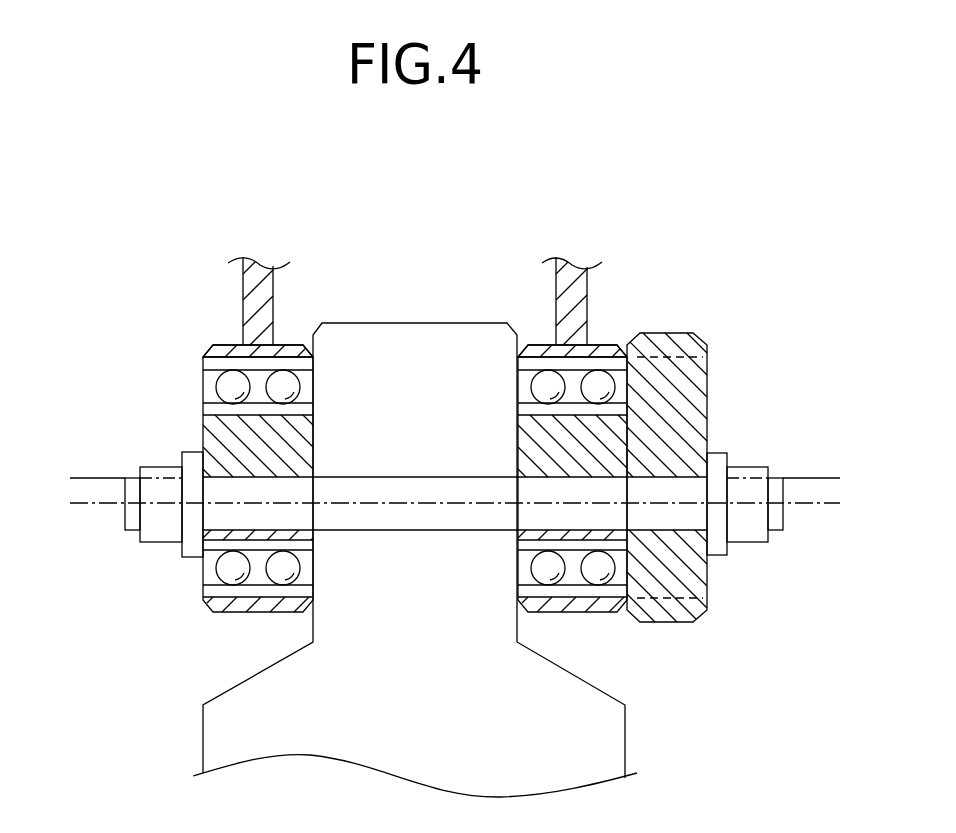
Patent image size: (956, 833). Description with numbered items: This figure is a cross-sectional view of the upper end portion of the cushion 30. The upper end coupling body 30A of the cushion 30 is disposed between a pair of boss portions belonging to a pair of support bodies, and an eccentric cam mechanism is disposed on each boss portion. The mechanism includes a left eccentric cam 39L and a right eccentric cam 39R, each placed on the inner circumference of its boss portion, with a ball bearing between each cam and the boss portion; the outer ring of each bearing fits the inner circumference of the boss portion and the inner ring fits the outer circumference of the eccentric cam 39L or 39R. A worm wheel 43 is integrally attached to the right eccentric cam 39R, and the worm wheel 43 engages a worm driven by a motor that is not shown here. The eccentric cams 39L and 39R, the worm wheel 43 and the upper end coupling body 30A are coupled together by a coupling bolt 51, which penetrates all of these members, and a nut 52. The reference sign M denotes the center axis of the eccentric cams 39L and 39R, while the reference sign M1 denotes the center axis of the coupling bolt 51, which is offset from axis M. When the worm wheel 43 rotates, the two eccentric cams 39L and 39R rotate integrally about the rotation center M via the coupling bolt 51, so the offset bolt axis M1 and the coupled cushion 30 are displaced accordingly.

The cushion 30 is at (203, 740).
The upper end coupling body 30A is at (413, 350).
The eccentric cam 39L is at (250, 445).
The eccentric cam 39R is at (595, 447).
The worm wheel 43 is at (685, 332).
The coupling bolt 51 is at (383, 520).
The nut 52 is at (745, 528).
The center axis of the eccentric cams M is at (90, 478).
The center axis of the coupling bolt M1 is at (90, 504).